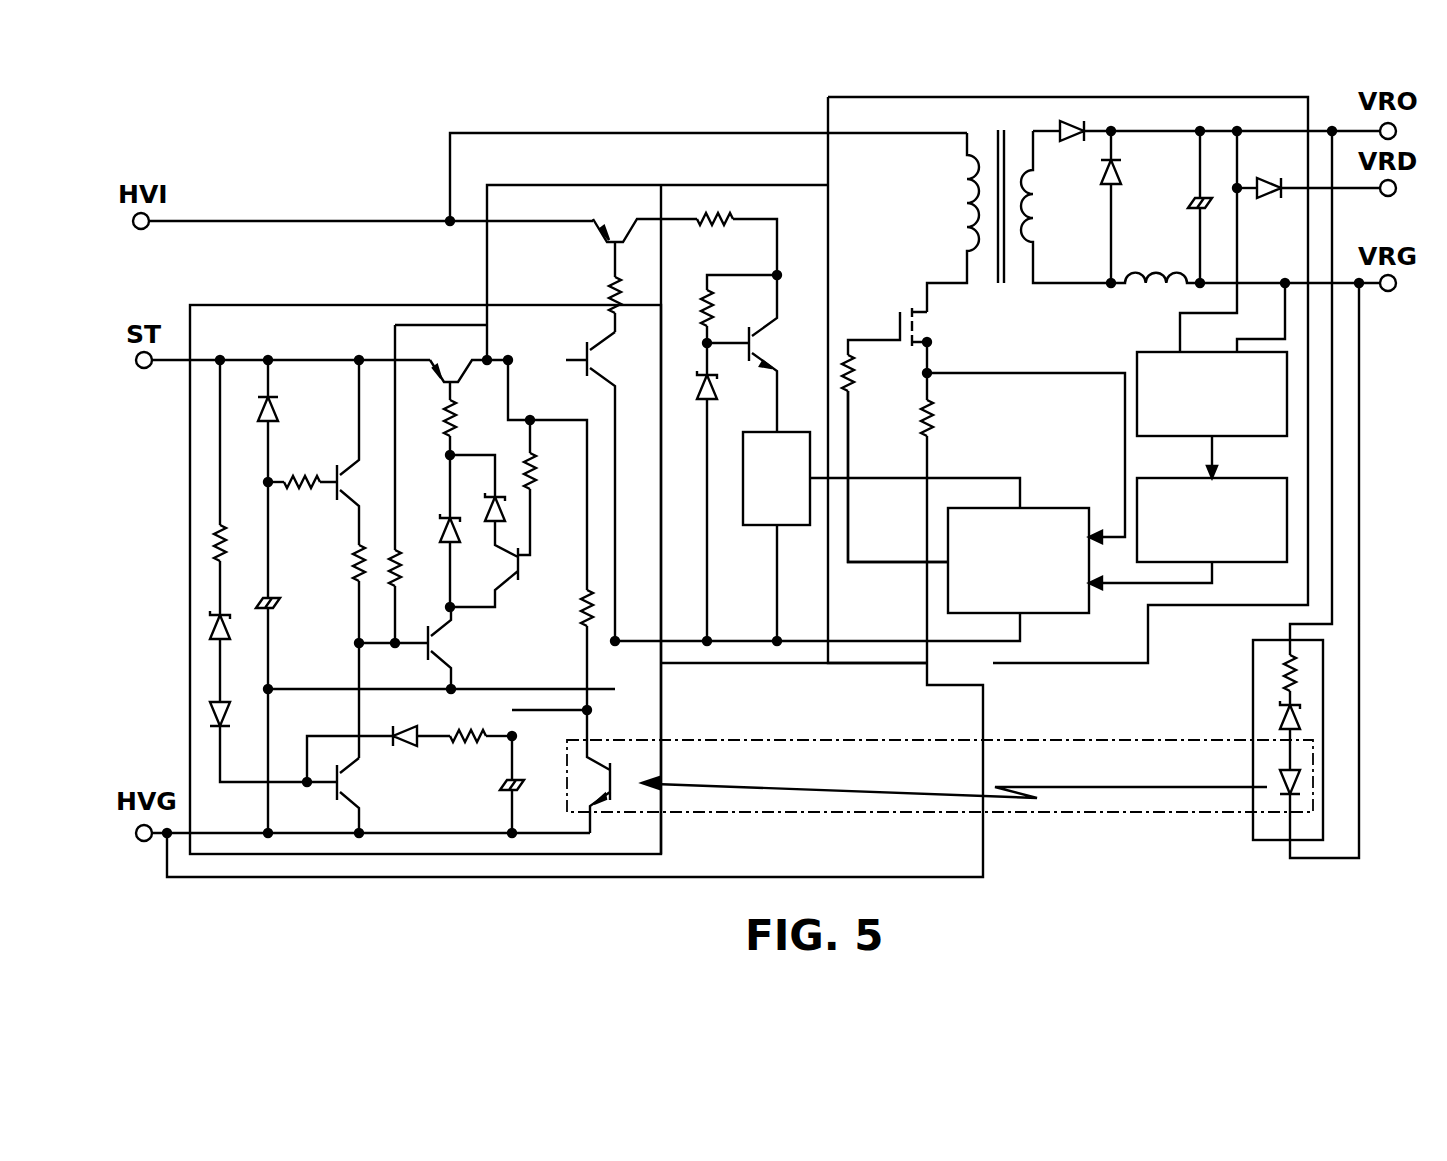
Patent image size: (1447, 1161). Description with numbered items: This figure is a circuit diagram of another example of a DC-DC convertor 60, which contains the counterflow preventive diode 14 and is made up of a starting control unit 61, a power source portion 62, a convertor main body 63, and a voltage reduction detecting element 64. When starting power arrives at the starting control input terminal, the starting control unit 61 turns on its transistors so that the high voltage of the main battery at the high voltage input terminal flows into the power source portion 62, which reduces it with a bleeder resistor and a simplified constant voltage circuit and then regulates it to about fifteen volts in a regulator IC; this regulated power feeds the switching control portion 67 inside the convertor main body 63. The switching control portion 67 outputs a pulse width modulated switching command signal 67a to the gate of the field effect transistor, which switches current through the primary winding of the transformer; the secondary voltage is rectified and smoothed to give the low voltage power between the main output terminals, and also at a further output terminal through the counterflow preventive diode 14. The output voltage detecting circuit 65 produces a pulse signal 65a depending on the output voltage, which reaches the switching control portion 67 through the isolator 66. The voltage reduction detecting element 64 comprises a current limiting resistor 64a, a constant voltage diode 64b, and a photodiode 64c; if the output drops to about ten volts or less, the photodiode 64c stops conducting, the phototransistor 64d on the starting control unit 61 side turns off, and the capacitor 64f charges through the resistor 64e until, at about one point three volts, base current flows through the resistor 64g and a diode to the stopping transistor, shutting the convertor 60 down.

The DC-DC convertor 60 is at (316, 189).
The starting control unit 61 is at (368, 305).
The power source portion 62 is at (680, 663).
The convertor main body 63 is at (993, 663).
The voltage reduction detecting element 64 is at (1006, 527).
The current limiting resistor 64a is at (1296, 665).
The constant voltage diode 64b is at (1296, 722).
The photodiode 64c is at (1296, 786).
The phototransistor 64d is at (613, 766).
The resistor 64e is at (549, 650).
The capacitor 64f is at (479, 784).
The resistor 64g is at (472, 719).
The output voltage detecting circuit 65 is at (1150, 352).
The pulse signal 65a is at (1215, 446).
The isolator 66 is at (1287, 520).
The switching control portion 67 is at (1040, 508).
The switching command signal 67a is at (850, 563).
The counterflow preventive diode 14 is at (1275, 200).